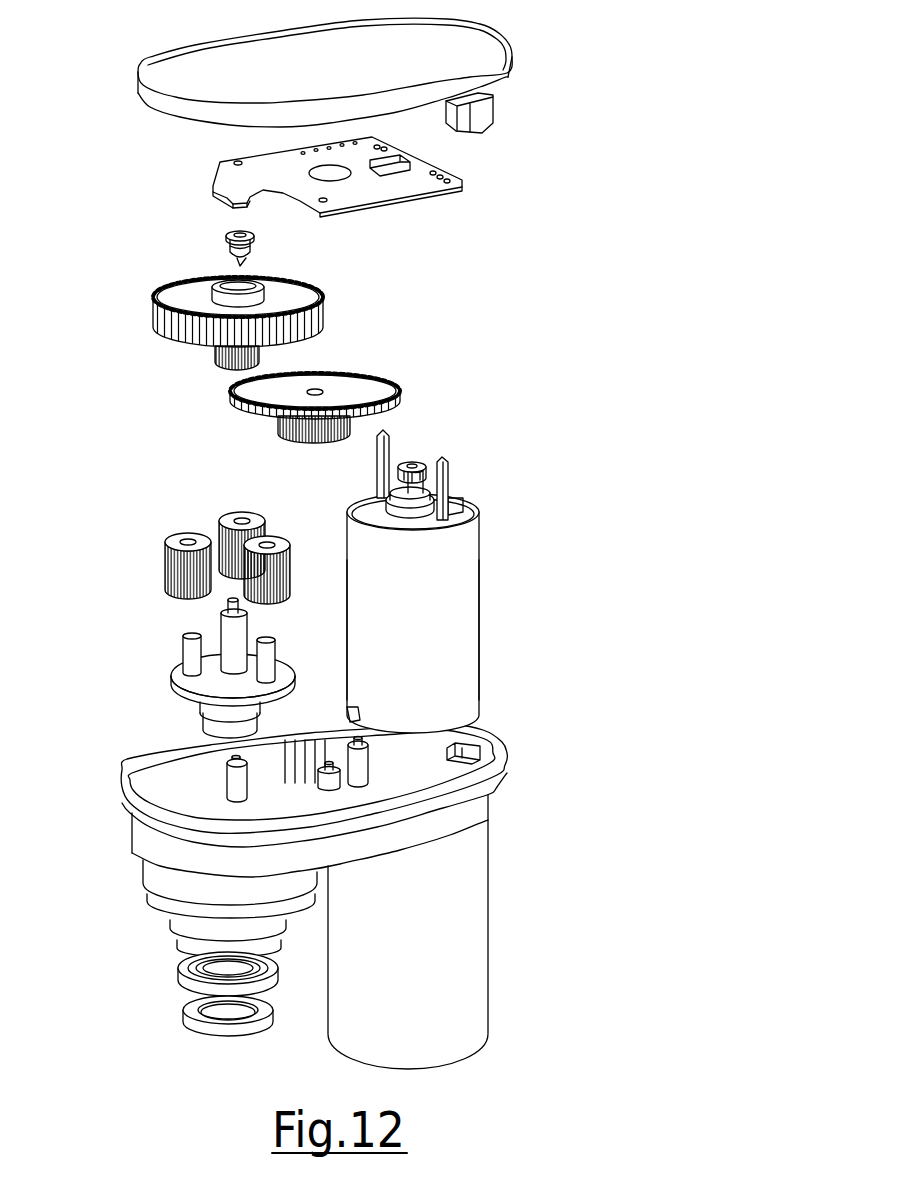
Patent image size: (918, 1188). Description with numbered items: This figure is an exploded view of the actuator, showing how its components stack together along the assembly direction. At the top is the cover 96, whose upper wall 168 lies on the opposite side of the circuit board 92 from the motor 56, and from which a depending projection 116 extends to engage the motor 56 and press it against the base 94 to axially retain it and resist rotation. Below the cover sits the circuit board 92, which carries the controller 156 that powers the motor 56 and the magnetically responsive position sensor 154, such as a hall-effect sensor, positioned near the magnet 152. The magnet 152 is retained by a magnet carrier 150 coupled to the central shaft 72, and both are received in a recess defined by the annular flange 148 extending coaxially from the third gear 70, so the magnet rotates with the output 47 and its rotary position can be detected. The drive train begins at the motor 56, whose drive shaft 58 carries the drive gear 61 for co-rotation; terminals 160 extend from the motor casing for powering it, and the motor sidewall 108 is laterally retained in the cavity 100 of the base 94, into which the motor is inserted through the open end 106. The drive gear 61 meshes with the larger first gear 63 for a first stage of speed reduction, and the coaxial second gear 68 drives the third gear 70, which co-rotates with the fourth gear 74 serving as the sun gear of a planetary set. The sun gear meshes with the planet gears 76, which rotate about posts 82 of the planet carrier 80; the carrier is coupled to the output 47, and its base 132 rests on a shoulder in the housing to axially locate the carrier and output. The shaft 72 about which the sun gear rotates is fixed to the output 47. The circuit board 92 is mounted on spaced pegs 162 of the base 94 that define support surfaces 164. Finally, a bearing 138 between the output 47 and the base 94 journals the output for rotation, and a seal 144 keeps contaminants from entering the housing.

The cover 96 is at (487, 35).
The upper wall 168 is at (197, 126).
The depending projection 116 is at (490, 113).
The circuit board 92 is at (445, 189).
The controller 156 is at (402, 164).
The position sensor 154 is at (248, 206).
The magnet carrier 150 is at (227, 247).
The magnet 152 is at (236, 231).
The third gear 70 is at (296, 302).
The annular flange 148 is at (243, 285).
The fourth gear 74 is at (216, 357).
The first gear 63 is at (366, 386).
The second gear 68 is at (280, 430).
The motor 56 is at (483, 579).
The drive shaft 58 is at (413, 463).
The drive gear 61 is at (425, 466).
The terminals 160 is at (378, 462).
The sidewall 108 is at (478, 668).
The planet gears 76 is at (235, 512).
The planet carrier 80 is at (150, 668).
The posts 82 is at (184, 650).
The shaft 72 is at (226, 620).
The base of the planet carrier 132 is at (297, 673).
The output 47 is at (212, 725).
The cavity 100 is at (430, 752).
The open end 106 is at (507, 773).
The support surfaces 164 is at (230, 758).
The pegs 162 is at (226, 790).
The base 94 is at (487, 921).
The bearing 138 is at (180, 983).
The seal 144 is at (190, 1025).